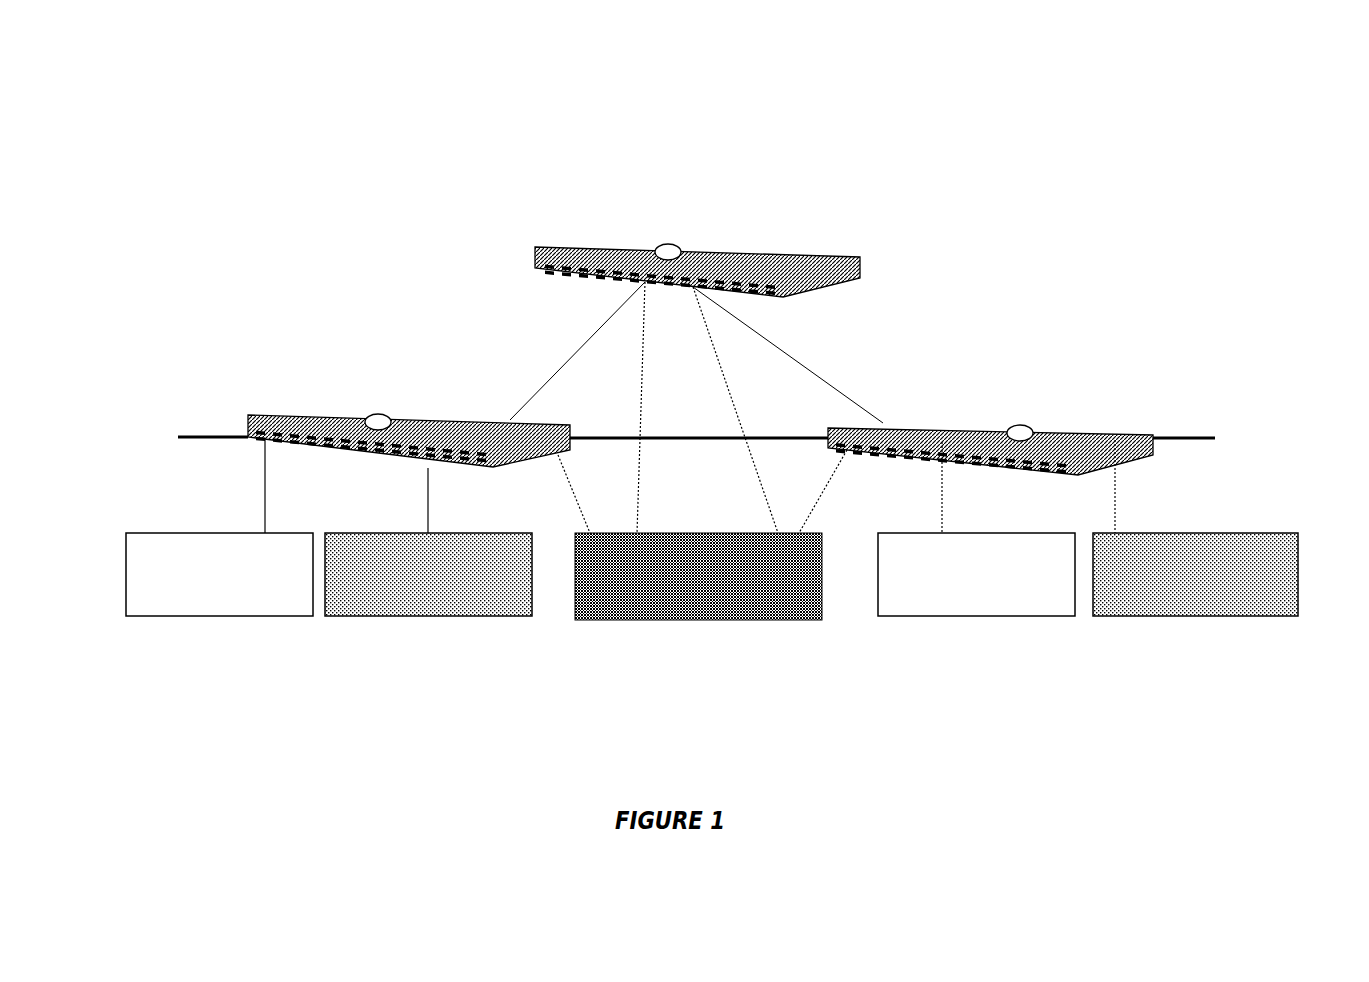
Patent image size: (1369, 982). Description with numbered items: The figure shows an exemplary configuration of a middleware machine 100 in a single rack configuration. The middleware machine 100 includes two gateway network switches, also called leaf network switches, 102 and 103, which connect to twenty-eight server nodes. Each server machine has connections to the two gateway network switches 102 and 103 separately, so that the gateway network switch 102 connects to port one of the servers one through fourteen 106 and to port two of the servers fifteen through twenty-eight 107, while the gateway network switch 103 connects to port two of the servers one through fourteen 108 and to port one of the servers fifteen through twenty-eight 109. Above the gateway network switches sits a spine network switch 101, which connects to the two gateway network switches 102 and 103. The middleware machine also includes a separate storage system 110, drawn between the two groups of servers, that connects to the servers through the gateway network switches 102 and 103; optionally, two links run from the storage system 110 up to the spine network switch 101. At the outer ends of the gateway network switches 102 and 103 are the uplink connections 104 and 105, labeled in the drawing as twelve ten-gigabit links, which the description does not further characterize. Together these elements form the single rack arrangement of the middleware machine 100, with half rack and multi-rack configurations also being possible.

The middleware machine 100 is at (158, 81).
The spine network switch 101 is at (757, 240).
The gateway network switch 102 is at (468, 422).
The gateway network switch 103 is at (905, 420).
The left 12x10G uplink 104 is at (162, 422).
The right 12x10G uplink 105 is at (1250, 420).
The servers 1-14 (port 1) 106 is at (197, 613).
The servers 15-28 (port 2) 107 is at (448, 613).
The servers 1-14 (port 2) 108 is at (973, 613).
The servers 15-28 (port 1) 109 is at (1213, 615).
The storage system 110 is at (715, 620).